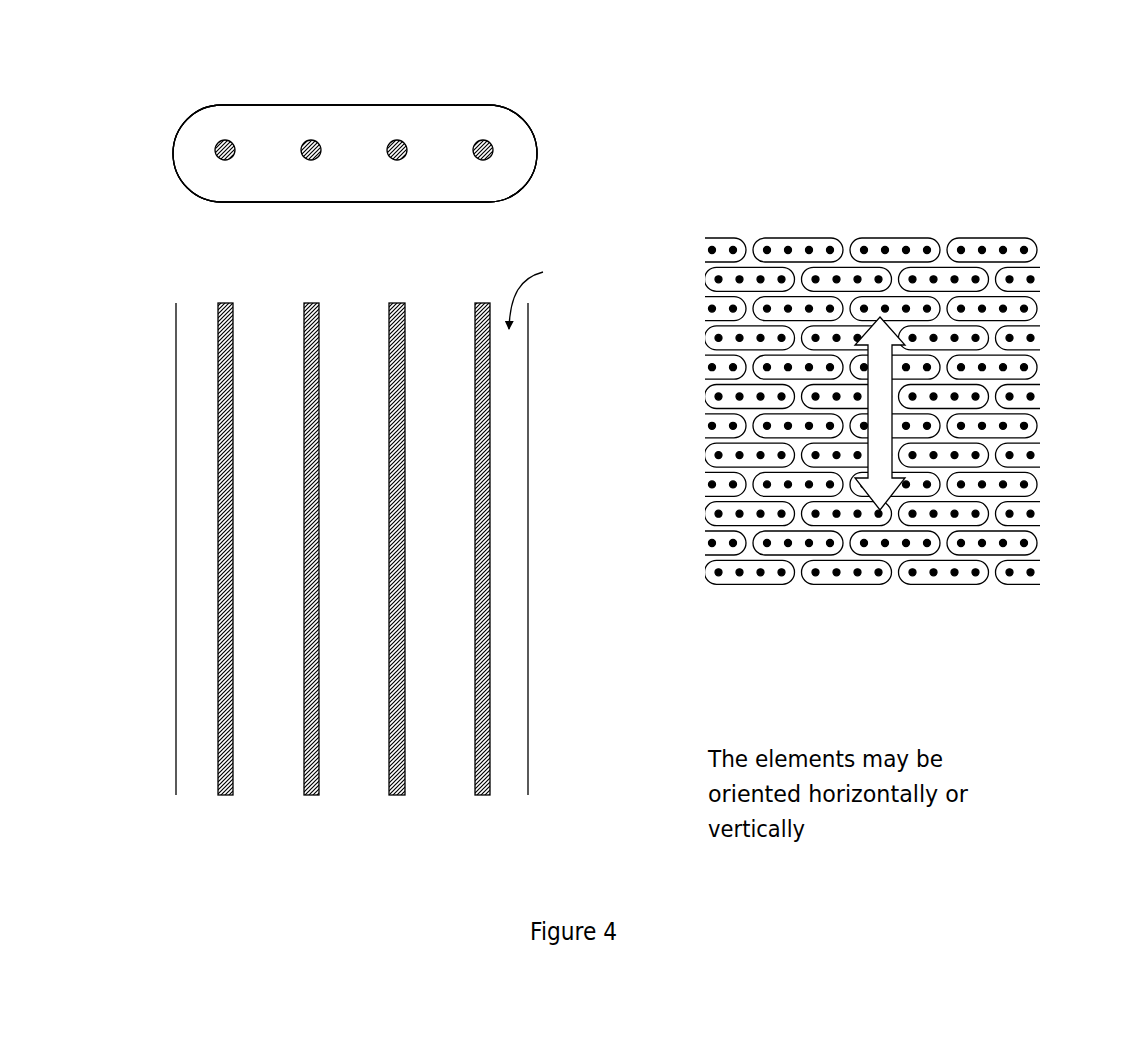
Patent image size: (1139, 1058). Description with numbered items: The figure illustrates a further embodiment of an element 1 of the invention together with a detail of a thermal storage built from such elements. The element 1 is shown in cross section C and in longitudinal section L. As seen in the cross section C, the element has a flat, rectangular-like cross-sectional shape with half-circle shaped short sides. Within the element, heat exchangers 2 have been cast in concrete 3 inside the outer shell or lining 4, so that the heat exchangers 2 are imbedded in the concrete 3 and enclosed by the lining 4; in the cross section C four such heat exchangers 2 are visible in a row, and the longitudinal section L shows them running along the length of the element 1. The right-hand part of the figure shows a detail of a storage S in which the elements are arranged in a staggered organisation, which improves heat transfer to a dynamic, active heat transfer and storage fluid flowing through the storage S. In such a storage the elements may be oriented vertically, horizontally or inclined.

The element 1 is at (482, 144).
The heat exchangers 2 is at (492, 150).
The concrete 3 is at (451, 177).
The outer shell or lining 4 is at (376, 103).
The cross section C is at (549, 180).
The longitudinal section L is at (549, 572).
The storage S is at (1058, 417).